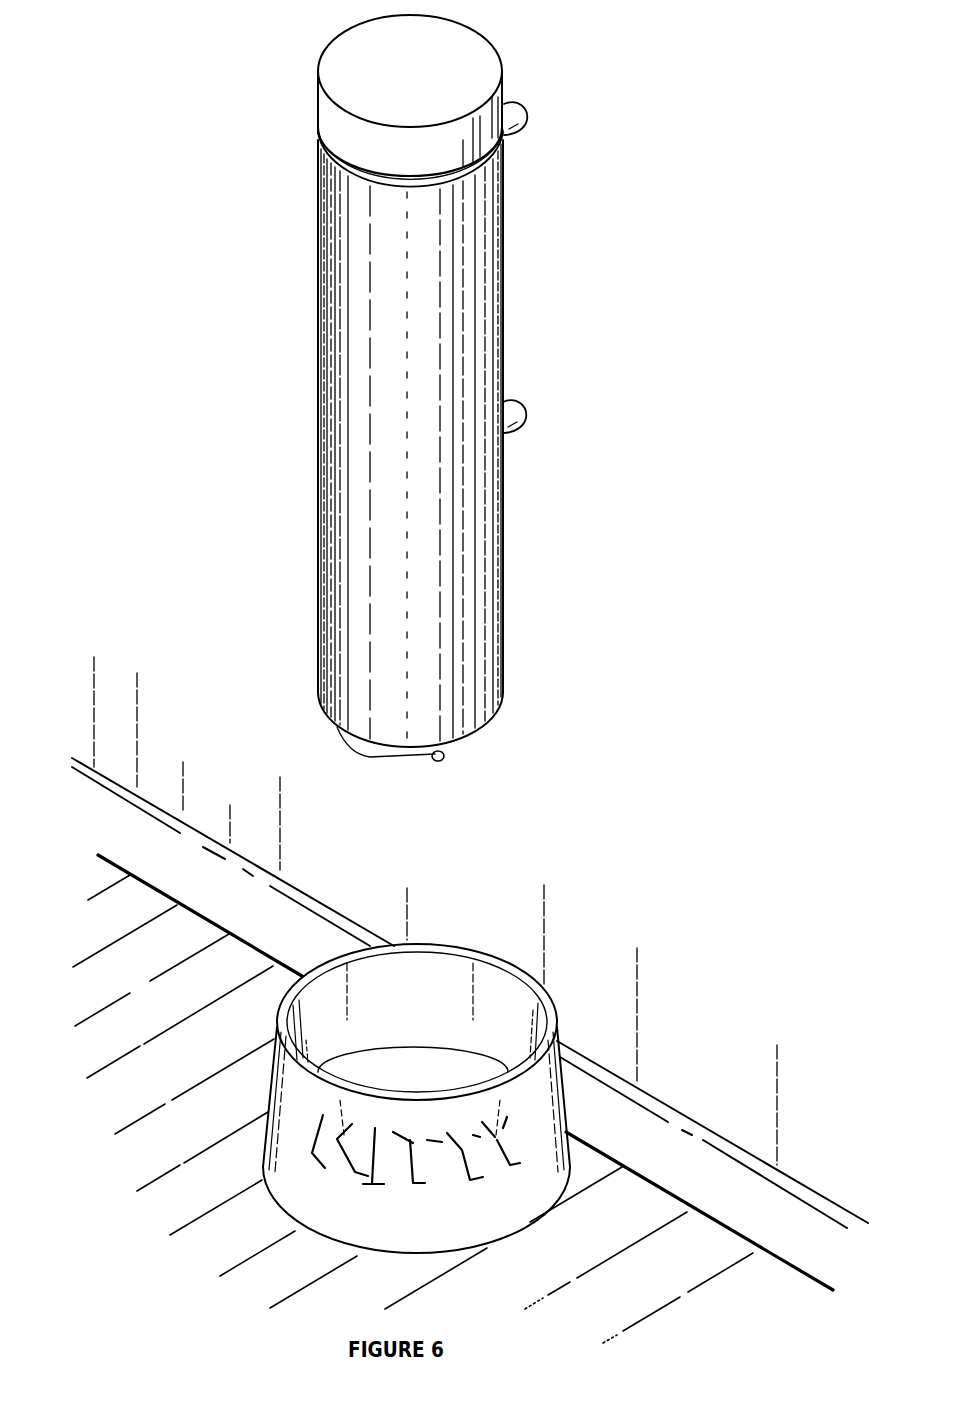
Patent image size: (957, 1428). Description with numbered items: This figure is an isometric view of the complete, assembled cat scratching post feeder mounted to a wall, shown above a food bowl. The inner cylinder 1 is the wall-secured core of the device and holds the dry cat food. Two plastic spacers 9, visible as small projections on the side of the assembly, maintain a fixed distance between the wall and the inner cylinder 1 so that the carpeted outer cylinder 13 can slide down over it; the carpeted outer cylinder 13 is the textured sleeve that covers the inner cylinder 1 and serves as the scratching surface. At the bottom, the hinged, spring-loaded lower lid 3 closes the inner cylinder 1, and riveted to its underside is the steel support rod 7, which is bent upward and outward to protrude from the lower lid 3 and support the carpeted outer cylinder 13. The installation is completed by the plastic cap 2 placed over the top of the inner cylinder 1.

The inner cylinder 1 is at (367, 178).
The plastic cap 2 is at (498, 52).
The lower lid 3 is at (366, 757).
The steel support rod 7 is at (444, 756).
The plastic spacers 9 is at (527, 113).
The carpeted outer cylinder 13 is at (507, 280).